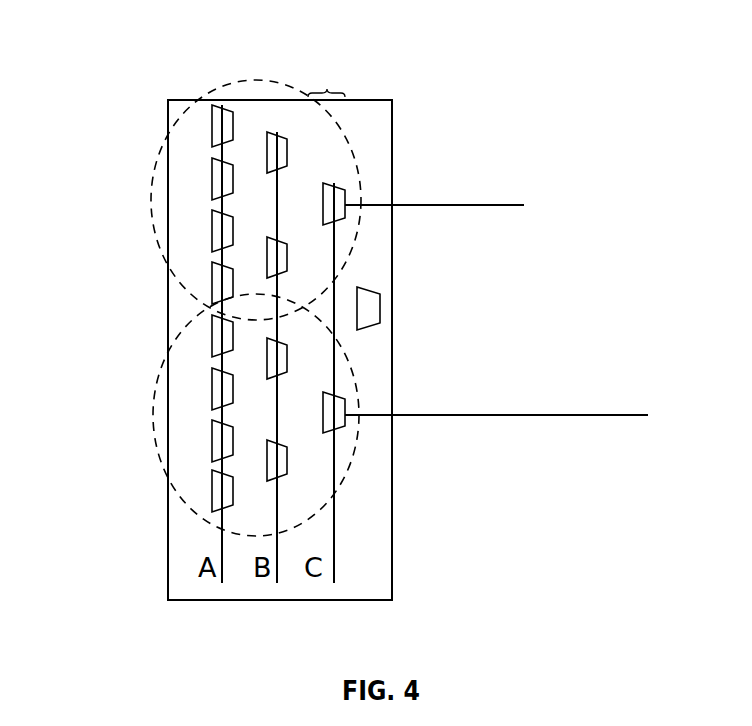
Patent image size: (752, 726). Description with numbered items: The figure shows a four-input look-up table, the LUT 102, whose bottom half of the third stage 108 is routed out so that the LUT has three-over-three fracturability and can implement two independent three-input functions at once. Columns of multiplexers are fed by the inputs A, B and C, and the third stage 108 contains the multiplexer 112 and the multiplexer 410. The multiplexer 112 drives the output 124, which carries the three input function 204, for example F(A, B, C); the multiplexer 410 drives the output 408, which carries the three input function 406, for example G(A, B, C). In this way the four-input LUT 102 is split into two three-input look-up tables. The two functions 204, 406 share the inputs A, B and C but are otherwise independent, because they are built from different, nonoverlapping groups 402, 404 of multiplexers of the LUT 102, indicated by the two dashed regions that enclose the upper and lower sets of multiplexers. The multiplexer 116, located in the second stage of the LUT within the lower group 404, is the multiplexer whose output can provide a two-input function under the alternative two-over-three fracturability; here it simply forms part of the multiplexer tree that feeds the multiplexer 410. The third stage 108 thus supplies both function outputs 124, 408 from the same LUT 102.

The 4-LUT 102 is at (393, 124).
The third stage 108 is at (327, 79).
The multiplexer 112 is at (339, 184).
The multiplexer 116 is at (280, 448).
The output 124 is at (482, 207).
The three input function 204 is at (488, 164).
The group of multiplexers 402 is at (236, 81).
The group of multiplexers 404 is at (153, 420).
The three input function 406 is at (483, 376).
The output 408 is at (537, 417).
The multiplexer 410 is at (338, 435).